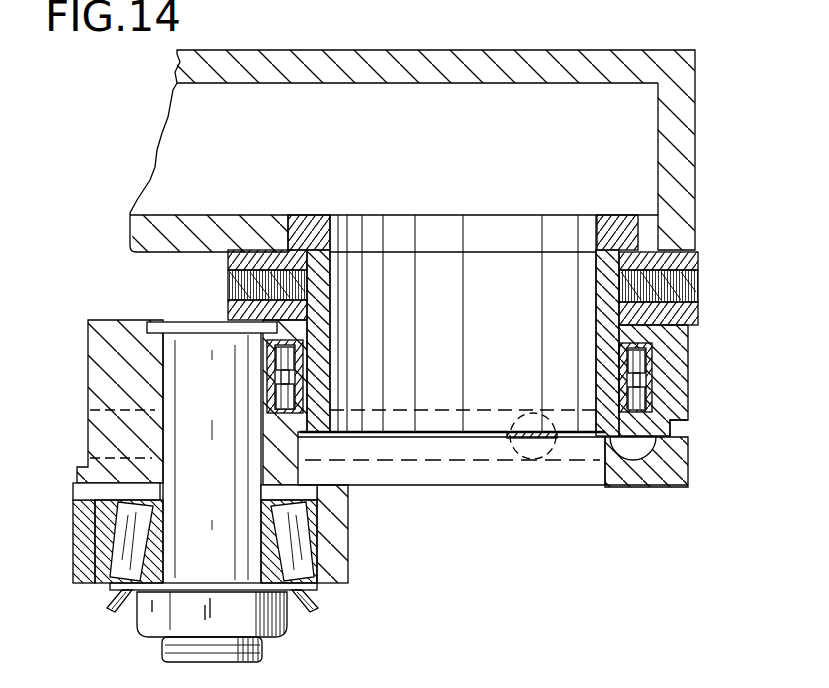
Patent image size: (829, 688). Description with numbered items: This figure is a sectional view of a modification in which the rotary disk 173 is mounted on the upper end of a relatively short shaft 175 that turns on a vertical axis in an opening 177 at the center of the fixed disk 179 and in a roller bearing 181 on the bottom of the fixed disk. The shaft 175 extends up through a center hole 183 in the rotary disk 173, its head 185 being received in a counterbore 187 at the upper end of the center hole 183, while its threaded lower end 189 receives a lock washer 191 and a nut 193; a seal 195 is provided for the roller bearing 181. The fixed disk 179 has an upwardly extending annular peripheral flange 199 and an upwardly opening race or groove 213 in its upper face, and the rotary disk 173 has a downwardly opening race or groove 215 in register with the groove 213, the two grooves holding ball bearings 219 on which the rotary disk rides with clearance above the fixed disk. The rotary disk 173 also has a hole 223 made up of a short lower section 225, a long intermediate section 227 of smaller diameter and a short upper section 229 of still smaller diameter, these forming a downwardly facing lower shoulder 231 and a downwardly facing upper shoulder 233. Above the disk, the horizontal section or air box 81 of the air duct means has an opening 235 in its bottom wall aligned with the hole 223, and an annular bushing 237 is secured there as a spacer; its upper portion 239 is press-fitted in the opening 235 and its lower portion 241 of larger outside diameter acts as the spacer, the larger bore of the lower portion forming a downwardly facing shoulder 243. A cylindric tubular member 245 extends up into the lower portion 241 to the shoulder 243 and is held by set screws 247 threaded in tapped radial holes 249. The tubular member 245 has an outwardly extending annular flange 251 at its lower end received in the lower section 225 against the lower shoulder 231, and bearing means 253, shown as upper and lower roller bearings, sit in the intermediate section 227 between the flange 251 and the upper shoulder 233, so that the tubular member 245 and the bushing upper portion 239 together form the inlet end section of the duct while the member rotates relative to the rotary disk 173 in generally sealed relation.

The horizontal section 81 is at (695, 50).
The opening 235 is at (293, 215).
The annular bushing 237 is at (700, 248).
The upper portion 239 is at (318, 215).
The hole 223 is at (335, 333).
The circular race or groove 215 is at (472, 410).
The tapped radial holes 249 is at (228, 262).
The lower portion 241 is at (700, 260).
The set screws 247 is at (230, 292).
The cylindric tubular member 245 is at (605, 322).
The annular shoulder 243 is at (608, 266).
The intermediate section 227 is at (653, 368).
The upper section 229 is at (688, 328).
The annular peripheral flange 199 is at (675, 428).
The lower shoulder 231 is at (658, 412).
The upper shoulder 233 is at (617, 356).
The bearing means 253 is at (615, 388).
The lower section 225 is at (670, 421).
The rotary disk 173 is at (100, 342).
The head 185 is at (163, 322).
The counterbore 187 is at (100, 320).
The center hole 183 is at (90, 410).
The shaft 175 is at (190, 377).
The opening 177 is at (100, 446).
The roller bearing 181 is at (122, 536).
The seal 195 is at (320, 590).
The lock washer 191 is at (118, 598).
The nut 193 is at (290, 632).
The threaded lower end 189 is at (160, 645).
The fixed disk 179 is at (683, 487).
The circular race or groove 213 is at (637, 460).
The annular flange 251 is at (632, 422).
The ball bearings 219 is at (533, 460).